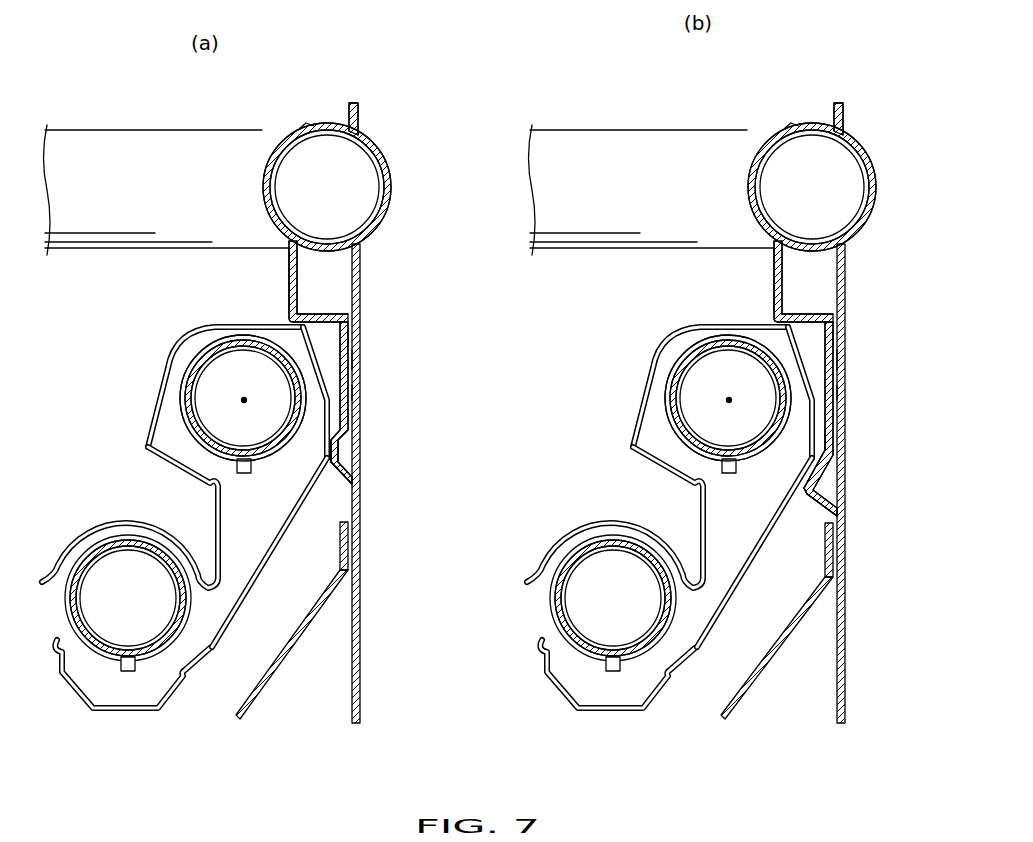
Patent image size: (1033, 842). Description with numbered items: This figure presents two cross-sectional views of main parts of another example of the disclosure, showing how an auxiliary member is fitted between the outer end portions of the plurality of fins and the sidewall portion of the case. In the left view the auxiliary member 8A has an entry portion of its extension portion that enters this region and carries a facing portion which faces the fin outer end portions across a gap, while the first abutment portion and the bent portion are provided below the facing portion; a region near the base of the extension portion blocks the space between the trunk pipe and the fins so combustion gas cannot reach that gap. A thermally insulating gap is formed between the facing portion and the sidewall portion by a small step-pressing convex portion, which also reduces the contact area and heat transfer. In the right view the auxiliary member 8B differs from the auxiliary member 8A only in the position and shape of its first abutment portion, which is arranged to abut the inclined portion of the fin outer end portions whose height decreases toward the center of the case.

The auxiliary member 8A is at (260, 164).
The auxiliary member 8B is at (784, 187).